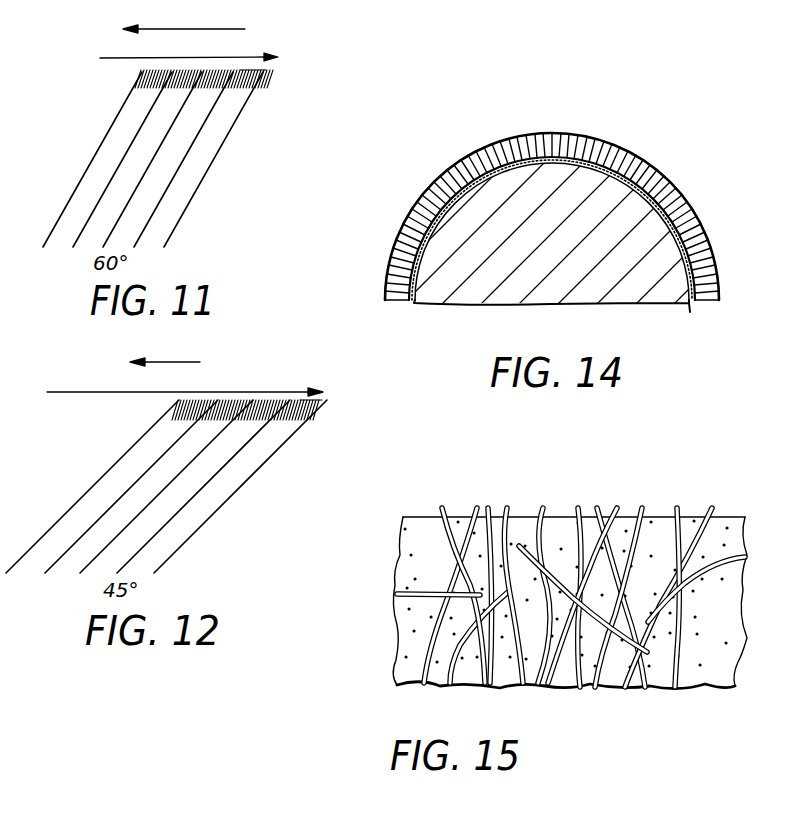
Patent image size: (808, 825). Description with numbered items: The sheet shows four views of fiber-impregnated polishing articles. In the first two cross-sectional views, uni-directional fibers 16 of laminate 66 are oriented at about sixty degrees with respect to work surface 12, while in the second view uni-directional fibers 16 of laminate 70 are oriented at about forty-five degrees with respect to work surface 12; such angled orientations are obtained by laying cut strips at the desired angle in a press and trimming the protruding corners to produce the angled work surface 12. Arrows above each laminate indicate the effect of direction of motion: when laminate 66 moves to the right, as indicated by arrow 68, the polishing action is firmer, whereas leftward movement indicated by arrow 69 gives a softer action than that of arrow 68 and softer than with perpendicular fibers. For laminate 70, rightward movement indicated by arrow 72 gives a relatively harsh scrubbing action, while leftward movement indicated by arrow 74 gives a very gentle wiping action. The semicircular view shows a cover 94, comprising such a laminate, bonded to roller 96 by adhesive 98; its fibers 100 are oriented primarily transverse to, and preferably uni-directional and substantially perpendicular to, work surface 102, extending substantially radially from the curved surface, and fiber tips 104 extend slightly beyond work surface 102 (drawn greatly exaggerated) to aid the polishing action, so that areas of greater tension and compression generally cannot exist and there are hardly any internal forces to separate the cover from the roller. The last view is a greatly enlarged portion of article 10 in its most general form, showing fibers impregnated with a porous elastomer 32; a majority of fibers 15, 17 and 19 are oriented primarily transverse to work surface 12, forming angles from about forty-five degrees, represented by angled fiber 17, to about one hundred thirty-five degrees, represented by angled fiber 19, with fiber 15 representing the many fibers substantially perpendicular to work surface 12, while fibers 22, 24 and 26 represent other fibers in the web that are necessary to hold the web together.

In FIG. 15, the article 10 is at (382, 645).
In FIG. 11, the work surface 12 is at (163, 68).
In FIG. 12, the work surface 12 is at (195, 402).
In FIG. 15, the work surface 12 is at (557, 513).
In FIG. 15, the fiber 15 is at (580, 528).
In FIG. 11, the uni-directional fibers 16 is at (248, 88).
In FIG. 12, the uni-directional fibers 16 is at (296, 416).
In FIG. 15, the angled fiber 17 is at (525, 508).
In FIG. 15, the angled fiber 19 is at (453, 508).
In FIG. 15, the fiber 22 is at (423, 590).
In FIG. 15, the fiber 24 is at (721, 550).
In FIG. 15, the fiber 26 is at (532, 688).
In FIG. 15, the porous elastomer 32 is at (705, 667).
In FIG. 11, the laminate 66 is at (200, 190).
In FIG. 11, the arrow 68 is at (170, 54).
In FIG. 11, the arrow 69 is at (202, 26).
In FIG. 12, the laminate 70 is at (222, 509).
In FIG. 12, the arrow 72 is at (167, 386).
In FIG. 12, the arrow 74 is at (184, 361).
In FIG. 14, the cover 94 is at (690, 195).
In FIG. 14, the roller 96 is at (483, 292).
In FIG. 14, the adhesive 98 is at (690, 307).
In FIG. 14, the fibers 100 is at (624, 144).
In FIG. 14, the work surface 102 is at (466, 153).
In FIG. 14, the fiber tips 104 is at (542, 133).